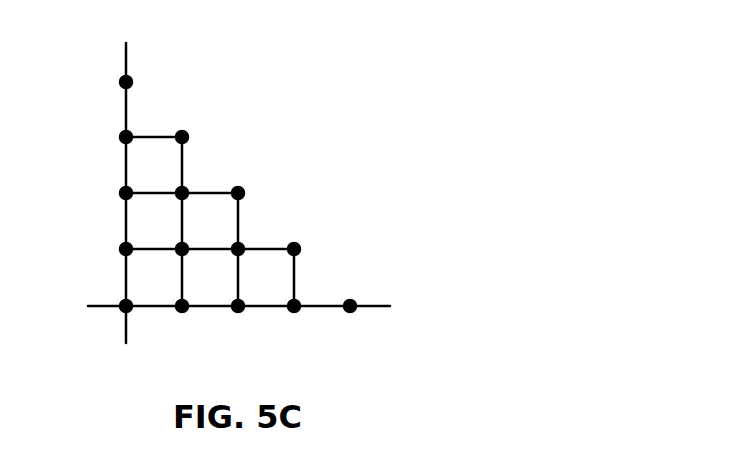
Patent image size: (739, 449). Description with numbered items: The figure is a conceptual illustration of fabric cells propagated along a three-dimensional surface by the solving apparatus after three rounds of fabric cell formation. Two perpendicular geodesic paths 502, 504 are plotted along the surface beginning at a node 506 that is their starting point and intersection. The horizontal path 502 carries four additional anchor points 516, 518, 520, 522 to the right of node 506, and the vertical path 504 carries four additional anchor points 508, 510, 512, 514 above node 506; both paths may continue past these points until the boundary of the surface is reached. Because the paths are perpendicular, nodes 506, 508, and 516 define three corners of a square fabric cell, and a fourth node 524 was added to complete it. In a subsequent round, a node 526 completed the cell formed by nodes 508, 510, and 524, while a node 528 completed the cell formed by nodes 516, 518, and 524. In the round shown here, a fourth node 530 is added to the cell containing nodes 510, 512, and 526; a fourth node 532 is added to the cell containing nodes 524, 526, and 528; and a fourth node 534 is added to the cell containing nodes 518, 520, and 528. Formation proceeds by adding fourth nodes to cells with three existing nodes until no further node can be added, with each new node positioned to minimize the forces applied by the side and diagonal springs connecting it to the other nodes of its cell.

The geodesic path 502 is at (265, 307).
The geodesic path 504 is at (128, 177).
The node 506 is at (126, 318).
The anchor point 508 is at (126, 247).
The anchor point 510 is at (126, 191).
The anchor point 512 is at (126, 135).
The anchor point 514 is at (126, 80).
The anchor point 516 is at (182, 306).
The anchor point 518 is at (238, 306).
The anchor point 520 is at (294, 306).
The anchor point 522 is at (350, 306).
The fourth node 524 is at (182, 251).
The node 526 is at (182, 193).
The node 528 is at (238, 249).
The fourth node 530 is at (182, 137).
The fourth node 532 is at (238, 193).
The fourth node 534 is at (294, 249).